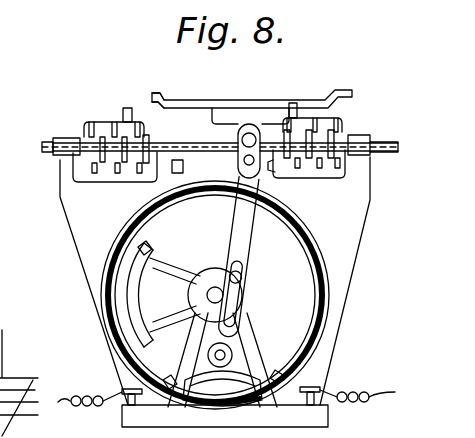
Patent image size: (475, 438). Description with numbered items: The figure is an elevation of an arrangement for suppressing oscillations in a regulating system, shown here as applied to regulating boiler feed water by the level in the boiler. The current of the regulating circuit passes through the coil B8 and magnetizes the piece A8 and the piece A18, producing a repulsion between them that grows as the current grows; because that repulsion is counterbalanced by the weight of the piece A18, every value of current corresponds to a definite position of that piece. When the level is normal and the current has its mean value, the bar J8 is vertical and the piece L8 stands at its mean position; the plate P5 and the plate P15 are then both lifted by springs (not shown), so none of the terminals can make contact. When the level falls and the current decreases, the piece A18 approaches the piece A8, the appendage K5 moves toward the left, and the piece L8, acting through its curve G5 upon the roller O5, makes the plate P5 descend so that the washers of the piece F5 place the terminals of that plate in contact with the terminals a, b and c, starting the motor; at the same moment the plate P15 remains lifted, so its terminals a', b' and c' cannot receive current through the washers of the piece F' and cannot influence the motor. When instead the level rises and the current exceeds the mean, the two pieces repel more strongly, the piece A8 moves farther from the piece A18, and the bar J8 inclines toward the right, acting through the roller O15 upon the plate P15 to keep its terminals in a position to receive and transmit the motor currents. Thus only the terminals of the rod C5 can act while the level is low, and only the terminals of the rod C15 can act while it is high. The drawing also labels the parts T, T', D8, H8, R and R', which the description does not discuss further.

The piece L8 is at (212, 105).
The curve G5 is at (157, 100).
The roller O5 is at (127, 108).
The plate P5 is at (93, 115).
The terminal a is at (99, 174).
The terminal b is at (122, 174).
The terminal c is at (141, 174).
The piece with washers F5 is at (135, 152).
The rod C5 is at (50, 150).
The terminal T is at (185, 164).
The appendage K5 is at (240, 142).
The roller O15 is at (290, 110).
The plate P15 is at (327, 116).
The contact segment a' is at (303, 168).
The contact segment b' is at (323, 167).
The contact segment c' is at (342, 167).
The piece with washers F' is at (329, 130).
The rod C15 is at (388, 152).
The terminal T' is at (284, 178).
The coil B8 is at (313, 263).
The piece A18 is at (147, 250).
The bar J8 is at (234, 268).
The pin D8 is at (236, 277).
The pivot H8 is at (232, 355).
The piece A8 is at (197, 395).
The resistance R is at (100, 388).
The resistance R' is at (347, 385).